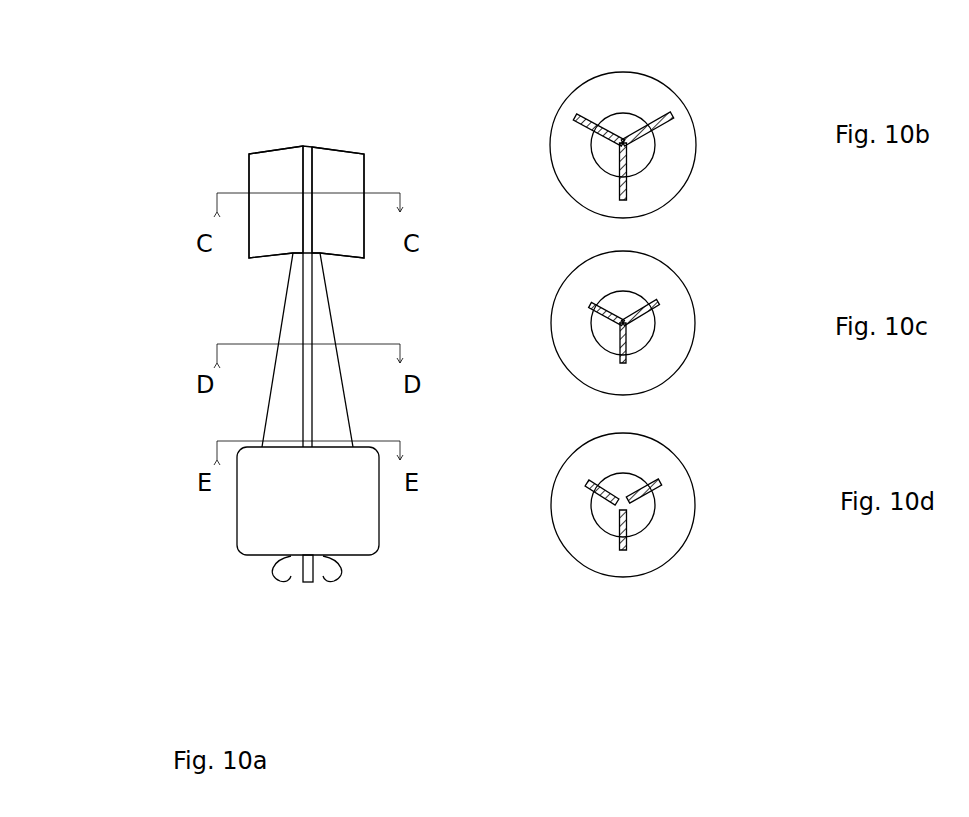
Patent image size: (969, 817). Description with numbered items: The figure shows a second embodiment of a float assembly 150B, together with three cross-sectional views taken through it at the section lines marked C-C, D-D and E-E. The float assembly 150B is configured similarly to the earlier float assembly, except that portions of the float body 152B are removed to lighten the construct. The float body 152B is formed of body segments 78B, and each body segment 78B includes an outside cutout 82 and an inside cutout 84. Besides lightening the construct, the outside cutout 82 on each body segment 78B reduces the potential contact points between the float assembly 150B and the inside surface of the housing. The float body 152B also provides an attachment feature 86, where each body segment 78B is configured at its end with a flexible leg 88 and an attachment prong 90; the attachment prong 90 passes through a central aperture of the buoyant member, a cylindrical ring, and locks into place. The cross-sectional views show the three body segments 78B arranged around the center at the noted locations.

In FIG. 10A, the float assembly 150B is at (157, 243).
In FIG. 10A, the body segment 78B is at (272, 173).
In FIG. 10B, the body segment 78B is at (597, 130).
In FIG. 10A, the outside cutout 82 is at (269, 291).
In FIG. 10A, the float body 152B is at (330, 397).
In FIG. 10B, the float body 152B is at (664, 122).
In FIG. 10A, the inside cutout 84 is at (305, 445).
In FIG. 10A, the attachment feature 86 is at (248, 578).
In FIG. 10A, the flexible leg 88 is at (292, 583).
In FIG. 10A, the attachment prong 90 is at (283, 578).